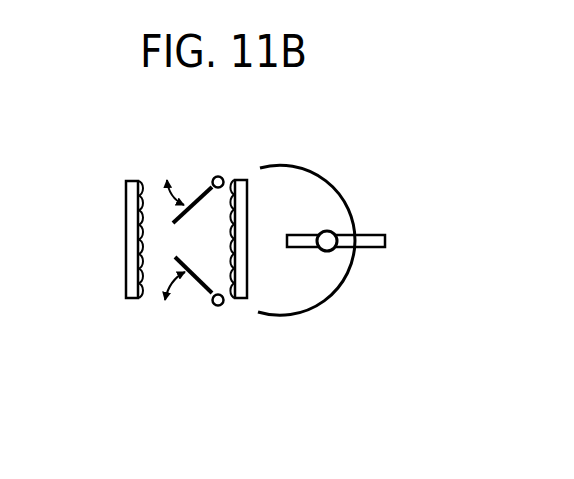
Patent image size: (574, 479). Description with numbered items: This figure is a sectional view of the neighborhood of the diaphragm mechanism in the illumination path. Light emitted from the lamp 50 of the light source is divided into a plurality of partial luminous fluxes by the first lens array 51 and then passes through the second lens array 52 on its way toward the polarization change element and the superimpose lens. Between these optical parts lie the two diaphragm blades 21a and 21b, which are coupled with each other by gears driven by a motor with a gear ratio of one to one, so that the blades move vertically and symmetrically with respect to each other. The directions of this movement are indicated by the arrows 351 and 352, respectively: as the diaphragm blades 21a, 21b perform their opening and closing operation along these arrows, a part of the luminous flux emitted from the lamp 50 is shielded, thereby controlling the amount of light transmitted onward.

The lamp 50 is at (328, 185).
The first lens array 51 is at (247, 298).
The second lens array 52 is at (132, 265).
The diaphragm blade 21a is at (200, 200).
The diaphragm blade 21b is at (200, 285).
The arrow 351 is at (177, 186).
The arrow 352 is at (168, 295).